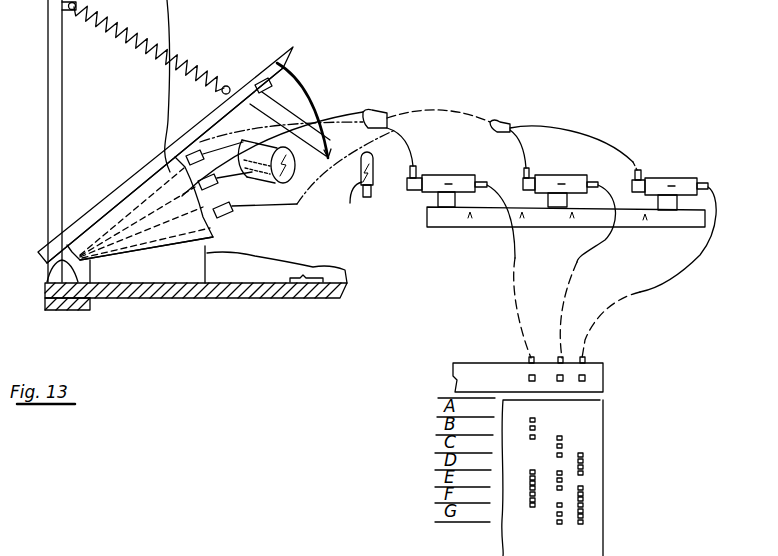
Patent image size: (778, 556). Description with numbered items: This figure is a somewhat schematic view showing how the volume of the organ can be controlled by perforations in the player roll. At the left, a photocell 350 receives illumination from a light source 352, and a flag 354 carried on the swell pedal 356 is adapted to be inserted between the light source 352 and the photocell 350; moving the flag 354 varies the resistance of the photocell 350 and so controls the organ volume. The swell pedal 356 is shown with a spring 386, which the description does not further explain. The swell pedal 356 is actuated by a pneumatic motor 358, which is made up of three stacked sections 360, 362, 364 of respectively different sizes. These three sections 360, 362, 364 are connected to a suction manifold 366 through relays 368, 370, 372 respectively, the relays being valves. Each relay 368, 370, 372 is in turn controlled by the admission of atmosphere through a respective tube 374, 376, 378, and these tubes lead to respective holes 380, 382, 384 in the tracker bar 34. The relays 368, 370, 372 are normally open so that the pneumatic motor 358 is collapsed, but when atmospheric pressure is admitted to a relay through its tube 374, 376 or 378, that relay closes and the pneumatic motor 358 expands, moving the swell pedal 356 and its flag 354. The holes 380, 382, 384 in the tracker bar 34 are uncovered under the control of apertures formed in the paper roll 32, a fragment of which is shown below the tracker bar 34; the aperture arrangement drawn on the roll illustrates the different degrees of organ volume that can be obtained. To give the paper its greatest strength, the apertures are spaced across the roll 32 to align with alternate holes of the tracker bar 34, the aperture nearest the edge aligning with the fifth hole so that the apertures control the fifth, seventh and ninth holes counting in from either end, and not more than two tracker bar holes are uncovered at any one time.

The paper roll 32 is at (604, 425).
The tracker bar 34 is at (463, 372).
The photocell 350 is at (284, 168).
The light source 352 is at (345, 188).
The flag 354 is at (299, 106).
The swell pedal 356 is at (279, 64).
The pneumatic motor 358 is at (163, 259).
The first stacked section 360 is at (182, 201).
The second stacked section 362 is at (160, 210).
The third stacked section 364 is at (212, 234).
The suction manifold 366 is at (443, 221).
The first relay 368 is at (478, 168).
The second relay 370 is at (583, 170).
The third relay 372 is at (693, 168).
The first tube 374 is at (523, 259).
The second tube 376 is at (590, 259).
The third tube 378 is at (650, 283).
The first tracker bar hole 380 is at (530, 378).
The second tracker bar hole 382 is at (561, 376).
The third tracker bar hole 384 is at (585, 378).
The spring 386 is at (183, 57).